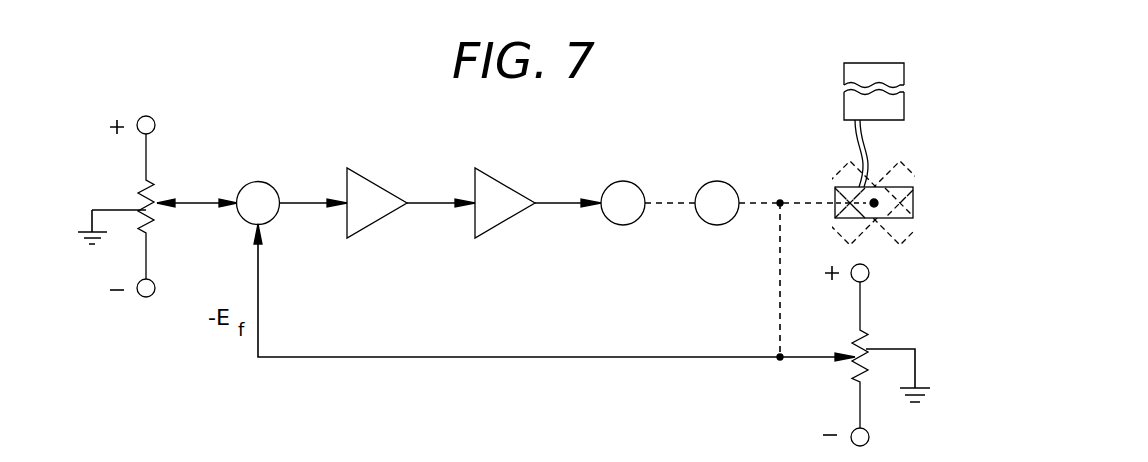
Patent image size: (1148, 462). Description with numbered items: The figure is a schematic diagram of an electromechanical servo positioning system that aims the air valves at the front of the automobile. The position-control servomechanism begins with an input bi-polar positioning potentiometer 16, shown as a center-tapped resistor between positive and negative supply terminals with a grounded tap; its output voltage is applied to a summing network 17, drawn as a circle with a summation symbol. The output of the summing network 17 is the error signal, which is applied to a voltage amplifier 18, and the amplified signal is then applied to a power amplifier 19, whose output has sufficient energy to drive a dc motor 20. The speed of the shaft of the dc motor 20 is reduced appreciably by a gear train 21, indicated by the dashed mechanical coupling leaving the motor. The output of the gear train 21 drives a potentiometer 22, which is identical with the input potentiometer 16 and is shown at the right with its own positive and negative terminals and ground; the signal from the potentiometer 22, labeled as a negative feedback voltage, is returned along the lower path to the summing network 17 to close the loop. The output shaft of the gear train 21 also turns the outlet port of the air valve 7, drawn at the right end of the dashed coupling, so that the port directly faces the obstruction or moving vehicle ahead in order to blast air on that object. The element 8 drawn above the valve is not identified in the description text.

The input bi-polar positioning potentiometer 16 is at (148, 179).
The summing network 17 is at (258, 181).
The voltage amplifier 18 is at (380, 182).
The power amplifier 19 is at (508, 182).
The dc motor 20 is at (628, 178).
The gear train 21 is at (720, 180).
The air valve 7 is at (915, 203).
The tape 8 is at (843, 100).
The potentiometer 22 is at (861, 331).